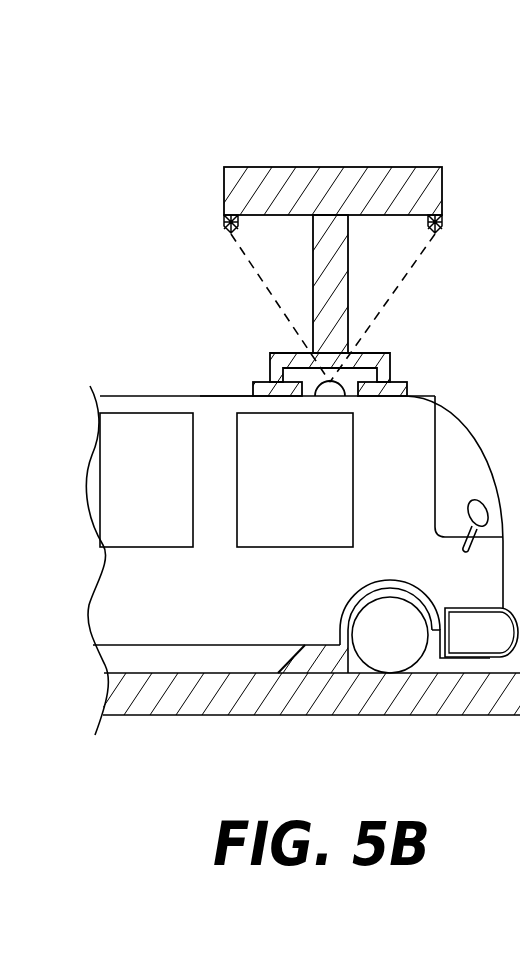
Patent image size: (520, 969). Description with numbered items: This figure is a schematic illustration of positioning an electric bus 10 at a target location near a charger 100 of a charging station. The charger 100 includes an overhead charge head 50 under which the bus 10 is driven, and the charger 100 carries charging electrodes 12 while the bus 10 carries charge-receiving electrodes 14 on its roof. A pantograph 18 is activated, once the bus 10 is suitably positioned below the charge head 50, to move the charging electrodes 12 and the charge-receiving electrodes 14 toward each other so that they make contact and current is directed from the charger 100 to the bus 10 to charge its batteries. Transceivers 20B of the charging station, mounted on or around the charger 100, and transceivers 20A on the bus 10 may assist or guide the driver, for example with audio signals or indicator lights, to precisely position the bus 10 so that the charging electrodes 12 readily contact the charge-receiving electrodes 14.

The charger 100 is at (305, 99).
The charge head 50 is at (350, 201).
The transceivers 20B is at (222, 222).
The transceivers 20A is at (344, 391).
The pantograph 18 is at (415, 290).
The charging electrodes 12 is at (238, 332).
The charge-receiving electrodes 14 is at (217, 370).
The electric bus 10 is at (228, 601).